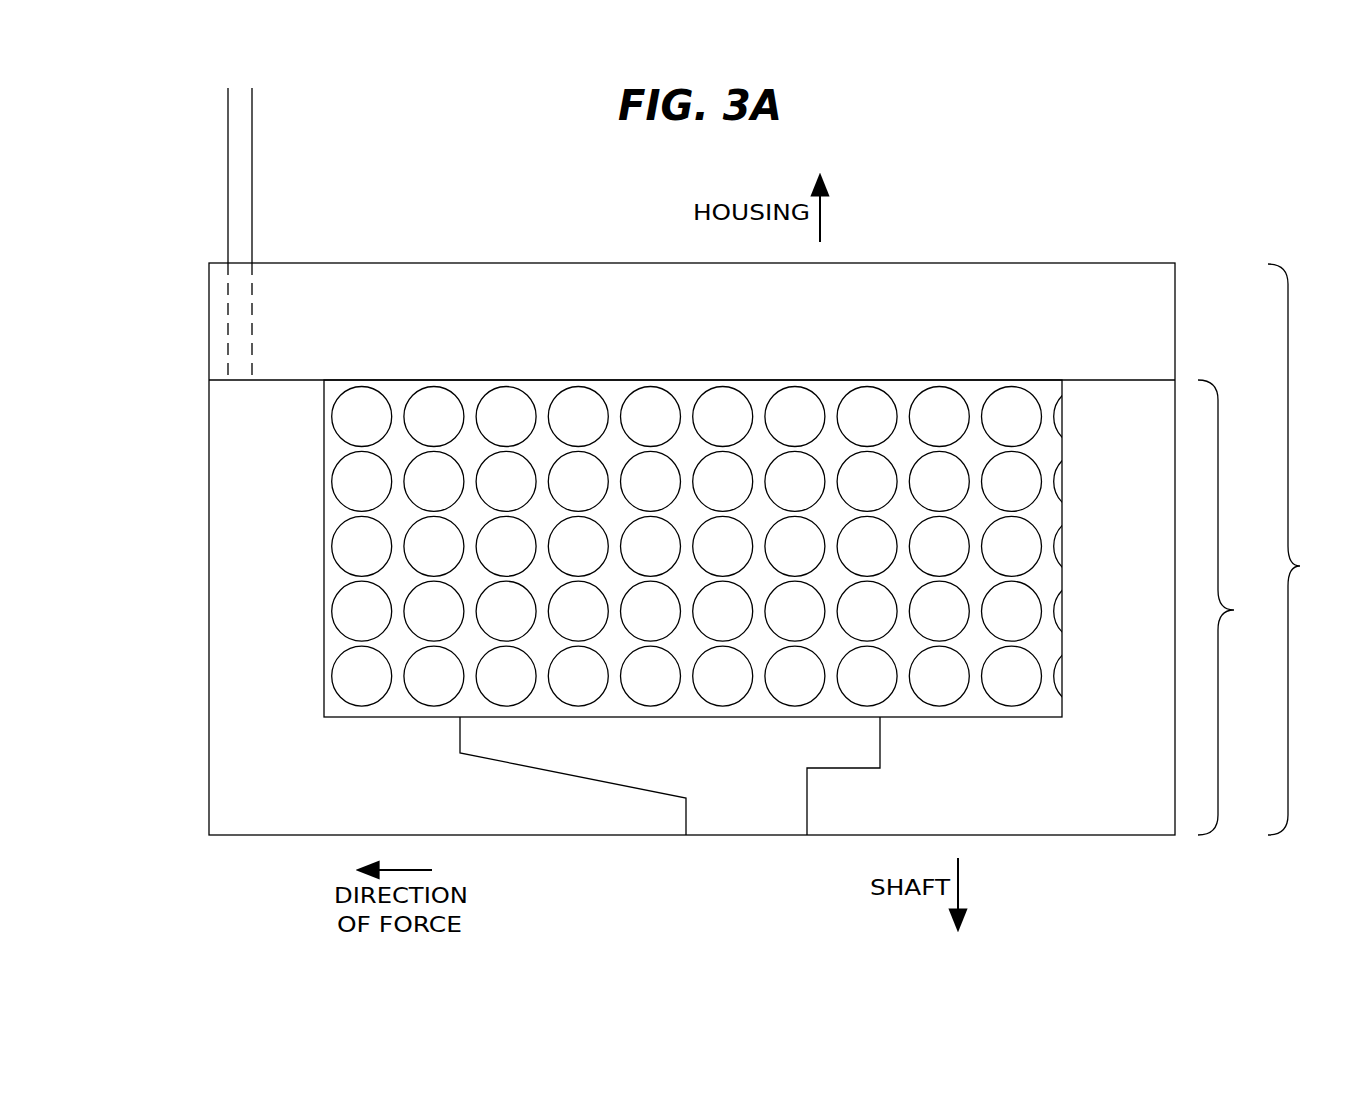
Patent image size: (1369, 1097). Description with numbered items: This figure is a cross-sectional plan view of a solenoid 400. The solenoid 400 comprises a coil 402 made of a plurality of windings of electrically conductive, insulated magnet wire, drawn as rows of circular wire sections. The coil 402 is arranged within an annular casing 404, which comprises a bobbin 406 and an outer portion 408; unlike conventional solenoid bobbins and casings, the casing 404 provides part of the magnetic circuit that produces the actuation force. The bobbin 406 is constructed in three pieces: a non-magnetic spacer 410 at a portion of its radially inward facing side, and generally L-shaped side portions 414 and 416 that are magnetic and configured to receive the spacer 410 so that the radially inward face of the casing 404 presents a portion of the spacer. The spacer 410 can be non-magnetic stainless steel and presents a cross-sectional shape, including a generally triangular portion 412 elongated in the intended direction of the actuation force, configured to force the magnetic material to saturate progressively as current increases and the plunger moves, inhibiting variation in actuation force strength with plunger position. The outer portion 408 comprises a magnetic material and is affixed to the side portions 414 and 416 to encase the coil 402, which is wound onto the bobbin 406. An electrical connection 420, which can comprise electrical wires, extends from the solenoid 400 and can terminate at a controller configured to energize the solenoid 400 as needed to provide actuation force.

The solenoid 400 is at (498, 212).
The coil 402 is at (900, 442).
The annular casing 404 is at (1310, 549).
The bobbin 406 is at (802, 607).
The outer portion 408 is at (732, 344).
The non-magnetic spacer 410 is at (774, 801).
The generally triangular portion 412 is at (542, 752).
The side portion 414 is at (321, 791).
The side portion 416 is at (1057, 781).
The electrical connection 420 is at (240, 212).